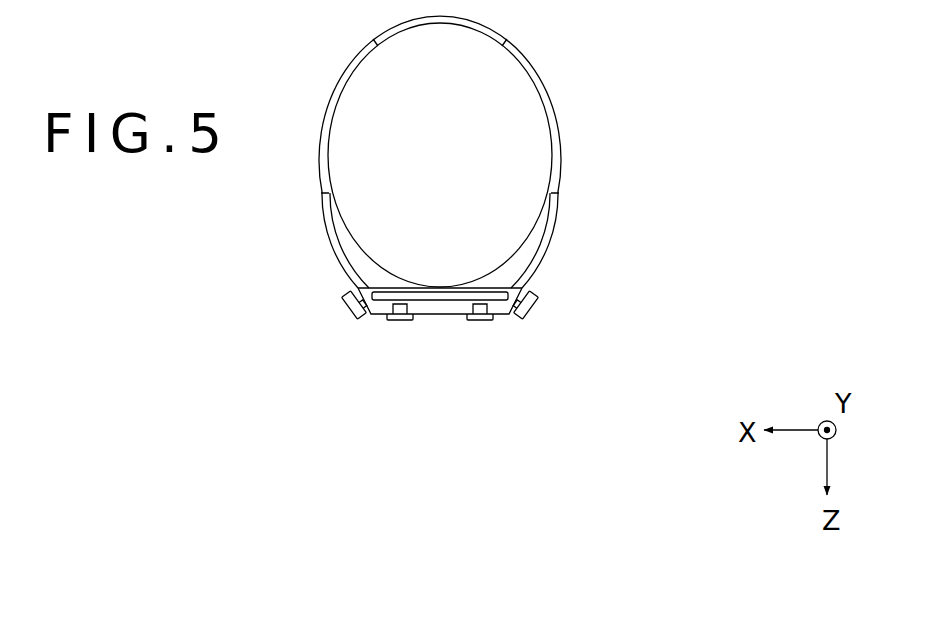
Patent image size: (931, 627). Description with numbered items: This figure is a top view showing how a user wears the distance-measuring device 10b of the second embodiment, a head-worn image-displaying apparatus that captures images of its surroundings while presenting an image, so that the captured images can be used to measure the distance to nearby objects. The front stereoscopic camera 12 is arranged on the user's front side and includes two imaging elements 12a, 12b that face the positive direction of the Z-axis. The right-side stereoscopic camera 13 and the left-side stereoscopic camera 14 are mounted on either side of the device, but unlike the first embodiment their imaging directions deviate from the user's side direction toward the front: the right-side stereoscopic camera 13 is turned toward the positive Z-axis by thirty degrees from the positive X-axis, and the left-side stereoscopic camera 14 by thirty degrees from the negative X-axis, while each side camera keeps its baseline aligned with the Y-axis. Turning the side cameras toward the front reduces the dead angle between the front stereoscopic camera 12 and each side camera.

The distance-measuring device 10b is at (580, 295).
The front stereoscopic camera 12 is at (440, 357).
The imaging element 12a is at (400, 321).
The imaging element 12b is at (487, 345).
The right-side stereoscopic camera 13 is at (347, 313).
The left-side stereoscopic camera 14 is at (534, 311).